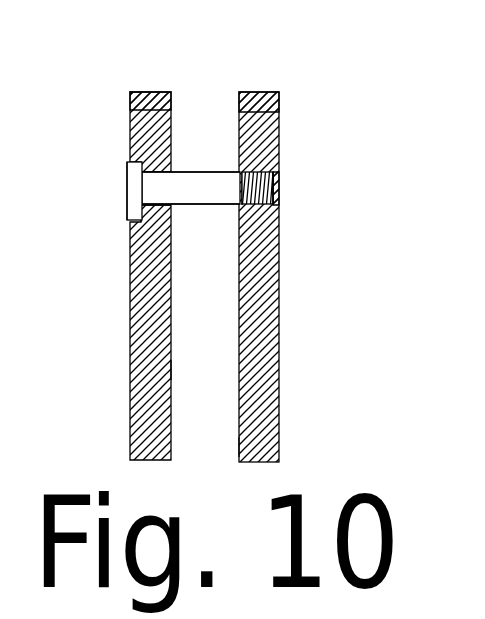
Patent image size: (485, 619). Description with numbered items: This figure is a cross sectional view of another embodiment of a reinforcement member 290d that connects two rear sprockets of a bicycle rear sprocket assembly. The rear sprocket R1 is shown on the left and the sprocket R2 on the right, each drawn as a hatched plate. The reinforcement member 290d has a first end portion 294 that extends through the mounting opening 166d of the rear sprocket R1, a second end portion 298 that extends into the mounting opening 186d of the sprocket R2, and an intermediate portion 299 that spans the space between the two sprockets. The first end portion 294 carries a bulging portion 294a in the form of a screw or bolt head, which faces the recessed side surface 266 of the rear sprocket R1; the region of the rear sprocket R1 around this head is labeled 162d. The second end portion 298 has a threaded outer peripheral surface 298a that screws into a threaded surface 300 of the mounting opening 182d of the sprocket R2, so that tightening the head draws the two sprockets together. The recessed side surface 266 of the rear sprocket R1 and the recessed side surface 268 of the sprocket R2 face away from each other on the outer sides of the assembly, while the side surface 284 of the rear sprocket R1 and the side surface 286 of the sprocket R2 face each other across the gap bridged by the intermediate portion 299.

The rear sprocket R1 is at (130, 106).
The sprocket R2 is at (278, 105).
The first aperture 162d is at (130, 260).
The mounting opening 166d is at (163, 181).
The mounting opening 182d is at (255, 258).
The mounting opening 186d is at (280, 177).
The recessed side surface 266 is at (130, 347).
The recessed side surface 268 is at (279, 363).
The side surface 284 is at (172, 370).
The side surface 286 is at (239, 447).
The reinforcement member 290d is at (200, 142).
The first end portion 294 is at (163, 187).
The bulging portion 294a is at (128, 197).
The second end portion 298 is at (277, 177).
The threaded outer peripheral surface 298a is at (277, 195).
The intermediate portion 299 is at (205, 204).
The threaded surface 300 is at (276, 236).